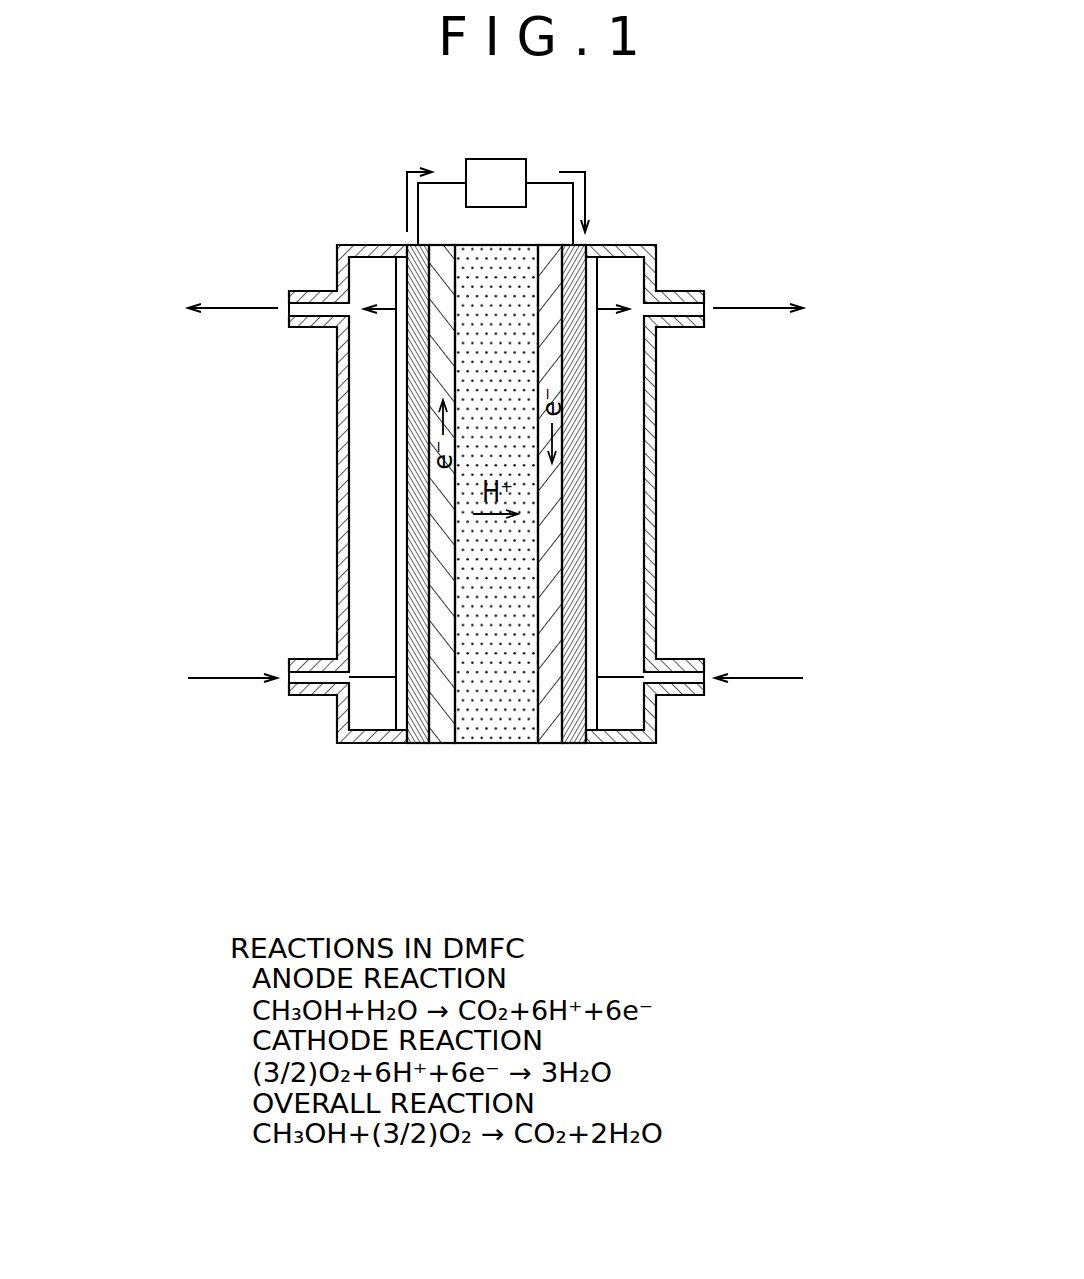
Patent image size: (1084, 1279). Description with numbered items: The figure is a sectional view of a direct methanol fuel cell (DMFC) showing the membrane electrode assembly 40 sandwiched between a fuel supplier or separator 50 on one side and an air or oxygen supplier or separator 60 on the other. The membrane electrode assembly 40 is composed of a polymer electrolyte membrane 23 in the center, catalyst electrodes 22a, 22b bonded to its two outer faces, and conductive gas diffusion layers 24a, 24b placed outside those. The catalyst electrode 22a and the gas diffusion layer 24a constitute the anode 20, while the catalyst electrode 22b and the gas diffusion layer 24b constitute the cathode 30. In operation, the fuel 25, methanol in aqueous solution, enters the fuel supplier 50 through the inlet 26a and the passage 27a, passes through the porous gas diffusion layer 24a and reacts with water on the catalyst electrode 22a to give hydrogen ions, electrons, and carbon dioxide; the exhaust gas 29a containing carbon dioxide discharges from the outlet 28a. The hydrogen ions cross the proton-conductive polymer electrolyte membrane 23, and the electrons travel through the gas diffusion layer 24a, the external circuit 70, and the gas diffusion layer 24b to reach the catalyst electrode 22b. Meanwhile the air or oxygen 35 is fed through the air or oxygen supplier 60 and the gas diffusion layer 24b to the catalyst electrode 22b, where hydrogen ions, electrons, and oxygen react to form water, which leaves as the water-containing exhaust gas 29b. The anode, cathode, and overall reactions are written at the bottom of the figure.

The anode 20 is at (405, 556).
The catalyst electrode 22a is at (443, 733).
The conductive gas diffusion layer 24a is at (419, 733).
The polymer electrolyte membrane 23 is at (502, 733).
The cathode 30 is at (575, 556).
The catalyst electrode 22b is at (549, 733).
The conductive gas diffusion layer 24b is at (586, 733).
The membrane electrode assembly 40 is at (490, 575).
The fuel supplier 50 is at (162, 371).
The air or oxygen supplier 60 is at (818, 371).
The fuel 25 is at (223, 680).
The air or oxygen 35 is at (768, 680).
The inlet 26a is at (287, 672).
The passage 27a is at (360, 482).
The outlet 28a is at (292, 310).
The exhaust gas 29a is at (218, 307).
The exhaust gas 29b is at (758, 307).
The external circuit 70 is at (518, 170).